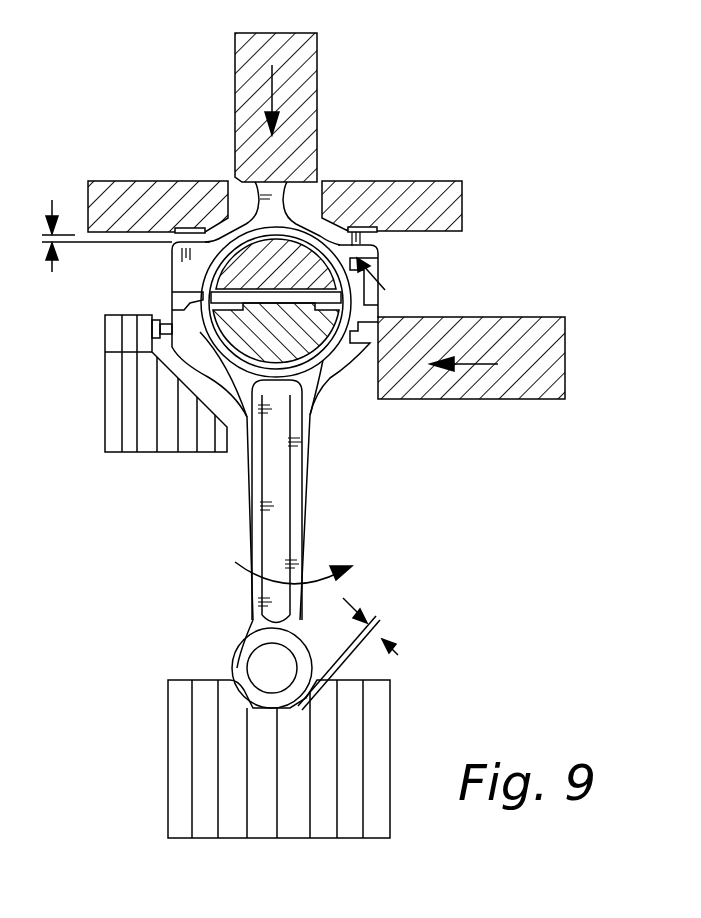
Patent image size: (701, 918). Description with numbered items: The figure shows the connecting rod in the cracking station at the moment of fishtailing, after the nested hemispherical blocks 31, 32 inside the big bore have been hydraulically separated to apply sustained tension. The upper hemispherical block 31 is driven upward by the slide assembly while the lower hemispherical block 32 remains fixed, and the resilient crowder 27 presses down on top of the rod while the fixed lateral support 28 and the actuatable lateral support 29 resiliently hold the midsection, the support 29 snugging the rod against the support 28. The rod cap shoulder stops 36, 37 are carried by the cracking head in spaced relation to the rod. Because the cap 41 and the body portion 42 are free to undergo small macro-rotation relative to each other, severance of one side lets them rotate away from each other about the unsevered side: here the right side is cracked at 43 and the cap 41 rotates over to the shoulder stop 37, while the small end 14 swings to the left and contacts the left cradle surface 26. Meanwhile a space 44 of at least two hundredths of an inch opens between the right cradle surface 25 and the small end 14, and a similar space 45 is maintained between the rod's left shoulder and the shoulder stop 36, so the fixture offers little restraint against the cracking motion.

The small end 14 is at (236, 660).
The right cradle surface 25 is at (312, 698).
The left cradle surface 26 is at (232, 675).
The resilient stop (crowder) 27 is at (298, 130).
The fixed lateral support 28 is at (144, 332).
The actuatable lateral support (crowder) 29 is at (490, 330).
The upper hemispherical block 31 is at (300, 262).
The lower hemispherical block 32 is at (302, 337).
The rod cap shoulder stop 36 is at (176, 200).
The rod cap shoulder stop 37 is at (423, 190).
The cap 41 is at (290, 200).
The body portion 42 is at (323, 370).
The crack 43 is at (385, 290).
The space 44 is at (398, 655).
The space 45 is at (52, 200).